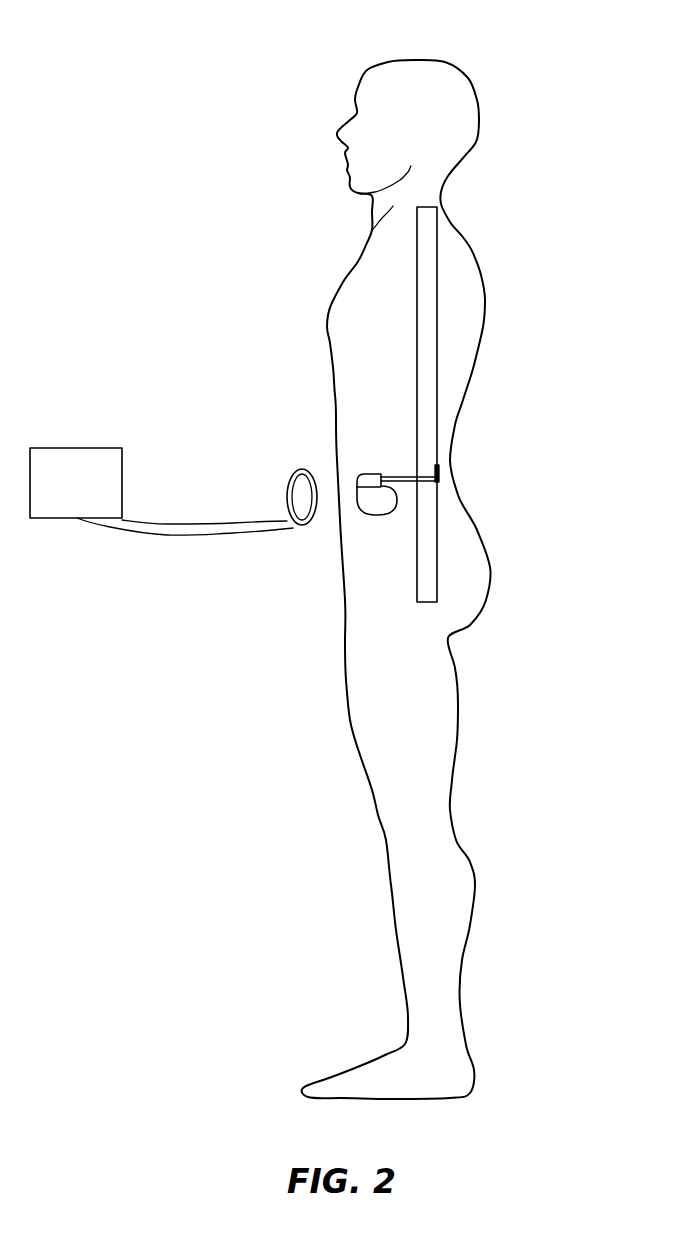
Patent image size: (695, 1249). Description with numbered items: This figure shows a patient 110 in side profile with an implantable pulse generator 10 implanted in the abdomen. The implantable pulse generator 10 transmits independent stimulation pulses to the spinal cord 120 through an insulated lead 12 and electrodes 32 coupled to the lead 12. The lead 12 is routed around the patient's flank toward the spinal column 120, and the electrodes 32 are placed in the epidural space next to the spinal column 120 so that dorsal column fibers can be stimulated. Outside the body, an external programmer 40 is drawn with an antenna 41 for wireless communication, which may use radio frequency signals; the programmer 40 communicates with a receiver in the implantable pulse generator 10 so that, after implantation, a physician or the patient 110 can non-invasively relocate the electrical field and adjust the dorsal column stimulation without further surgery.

The patient 110 is at (197, 71).
The spinal cord 120 is at (427, 311).
The insulated lead 12 is at (397, 475).
The electrodes 32 is at (440, 470).
The implantable pulse generator 10 is at (375, 508).
The external programmer 40 is at (67, 448).
The antenna 41 is at (292, 473).